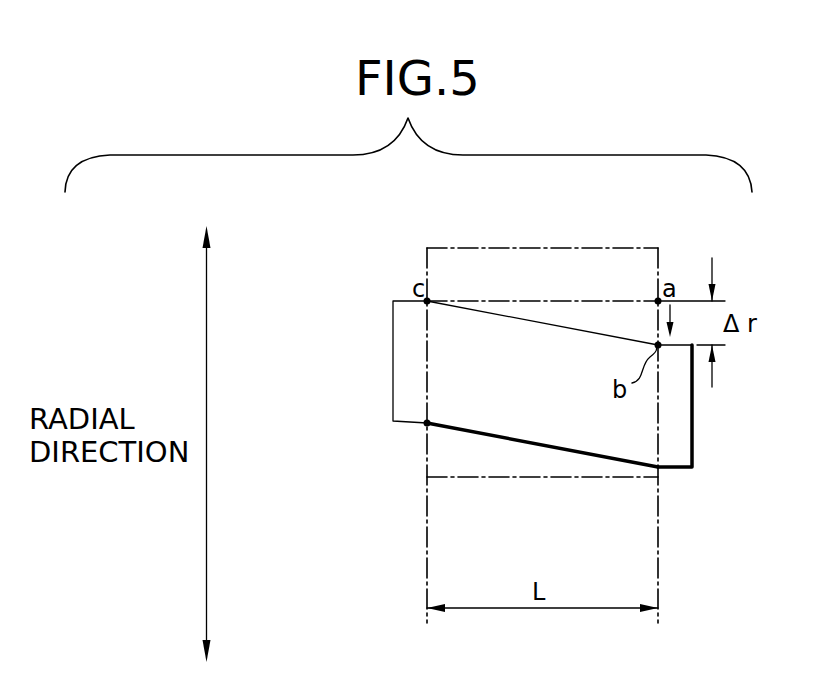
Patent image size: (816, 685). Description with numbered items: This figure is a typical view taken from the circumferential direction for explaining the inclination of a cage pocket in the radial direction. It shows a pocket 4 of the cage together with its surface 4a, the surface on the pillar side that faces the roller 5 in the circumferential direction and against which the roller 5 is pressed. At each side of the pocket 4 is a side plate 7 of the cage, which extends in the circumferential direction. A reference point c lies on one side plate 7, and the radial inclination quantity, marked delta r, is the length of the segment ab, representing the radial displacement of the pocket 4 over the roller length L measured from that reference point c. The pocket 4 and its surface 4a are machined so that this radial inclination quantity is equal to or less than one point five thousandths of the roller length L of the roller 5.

The pocket 4 is at (563, 380).
The surface of the pocket 4a is at (490, 317).
The roller 5 is at (557, 480).
The side plate 7 is at (406, 387).